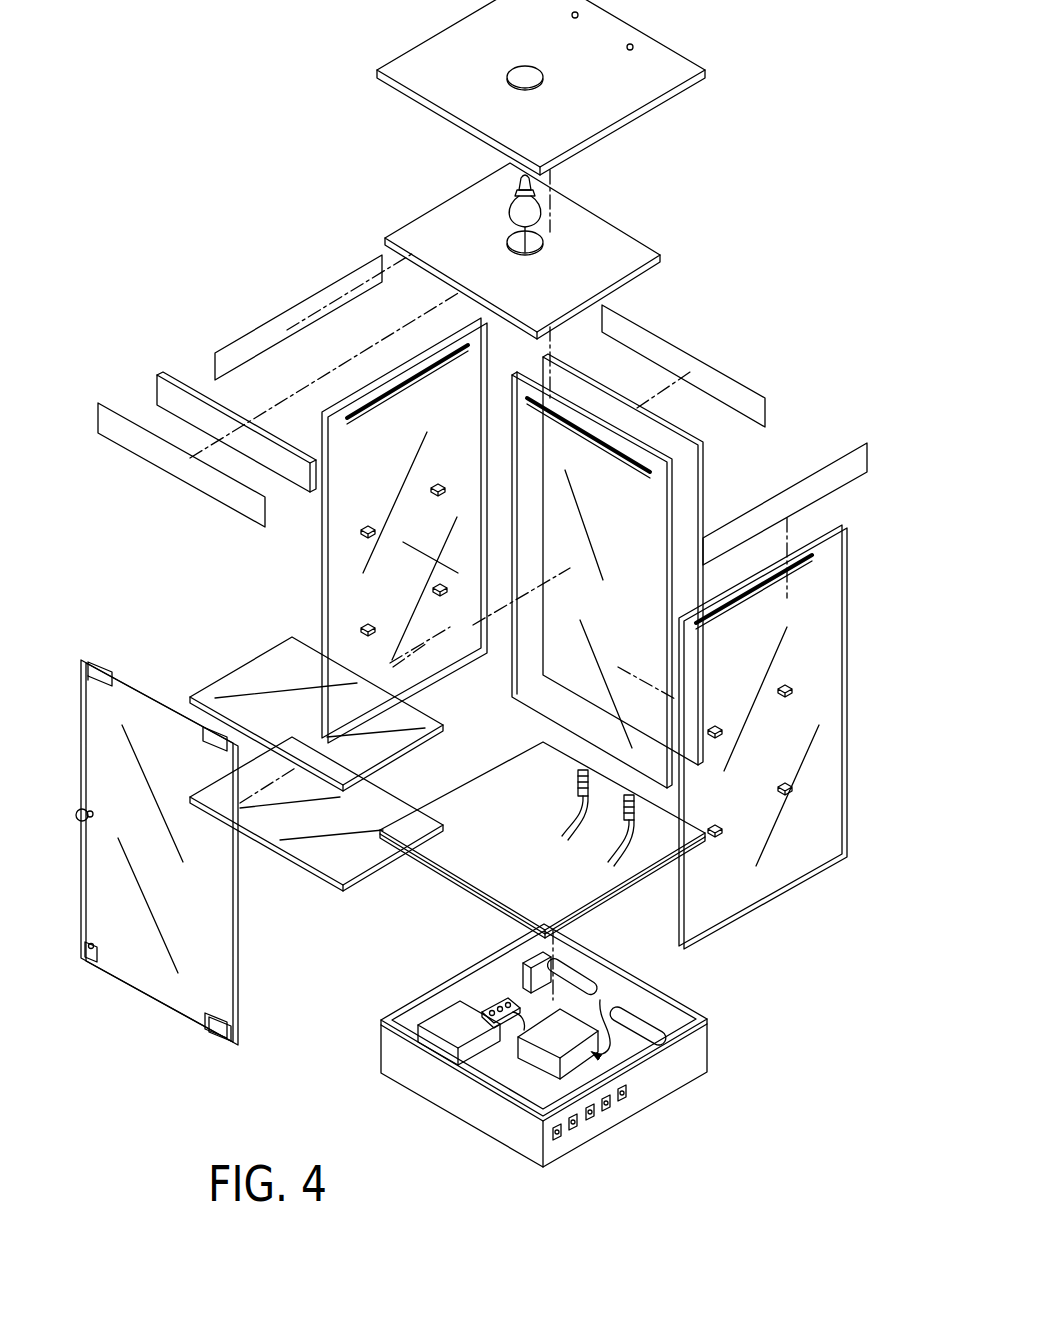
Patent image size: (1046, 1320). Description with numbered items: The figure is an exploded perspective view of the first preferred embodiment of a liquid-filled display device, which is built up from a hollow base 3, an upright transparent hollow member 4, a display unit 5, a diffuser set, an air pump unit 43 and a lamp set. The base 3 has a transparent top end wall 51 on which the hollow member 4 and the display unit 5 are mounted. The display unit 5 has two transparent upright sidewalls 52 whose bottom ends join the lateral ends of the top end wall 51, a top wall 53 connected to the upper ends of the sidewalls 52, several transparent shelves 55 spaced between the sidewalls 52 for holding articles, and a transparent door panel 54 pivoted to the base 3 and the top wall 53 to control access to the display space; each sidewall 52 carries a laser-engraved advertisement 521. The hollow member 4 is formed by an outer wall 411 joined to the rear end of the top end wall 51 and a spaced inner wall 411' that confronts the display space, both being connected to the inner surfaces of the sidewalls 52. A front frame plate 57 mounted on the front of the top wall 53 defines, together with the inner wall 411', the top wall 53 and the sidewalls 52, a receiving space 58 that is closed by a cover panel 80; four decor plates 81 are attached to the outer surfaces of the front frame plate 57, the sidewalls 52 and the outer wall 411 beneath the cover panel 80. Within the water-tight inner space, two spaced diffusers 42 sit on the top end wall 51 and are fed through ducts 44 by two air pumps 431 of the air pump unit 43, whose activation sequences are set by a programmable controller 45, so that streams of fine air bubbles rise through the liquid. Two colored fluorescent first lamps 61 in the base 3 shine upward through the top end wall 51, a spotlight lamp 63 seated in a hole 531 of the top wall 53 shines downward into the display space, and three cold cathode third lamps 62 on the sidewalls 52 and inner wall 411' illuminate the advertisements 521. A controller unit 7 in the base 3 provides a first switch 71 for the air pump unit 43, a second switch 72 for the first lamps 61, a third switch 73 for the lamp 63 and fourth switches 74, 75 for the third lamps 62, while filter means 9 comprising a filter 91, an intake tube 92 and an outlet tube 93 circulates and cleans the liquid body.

The hollow base 3 is at (551, 1039).
The upright transparent hollow member 4 is at (674, 547).
The display unit 5 is at (461, 675).
The controller unit 7 is at (580, 1115).
The filter means 9 is at (522, 1030).
The diffusers 42 is at (578, 782).
The air pump unit 43 is at (402, 1001).
The ducts 44 is at (579, 821).
The programmable controller 45 is at (505, 1020).
The top end wall 51 is at (590, 902).
The sidewalls 52 is at (542, 633).
The top wall 53 is at (568, 251).
The door panel 54 is at (232, 985).
The shelves 55 is at (262, 662).
The front frame plate 57 is at (162, 393).
The receiving space 58 is at (537, 237).
The first lamps 61 is at (567, 973).
The third lamps 62 is at (468, 347).
The lamp 63 is at (505, 205).
The first switch 71 is at (547, 1138).
The second switch 72 is at (570, 1128).
The third switch 73 is at (590, 1112).
The fourth switch 74 is at (606, 1103).
The fourth switch 75 is at (627, 1095).
The cover panel 80 is at (685, 50).
The decor plates 81 is at (310, 303).
The filter 91 is at (540, 1062).
The intake tube 92 is at (500, 1010).
The outlet tube 93 is at (611, 1013).
The outer wall 411 is at (660, 559).
The inner wall 411' is at (648, 580).
The air pumps 431 is at (432, 1022).
The advertisement 521 is at (357, 455).
The hole 531 is at (537, 248).